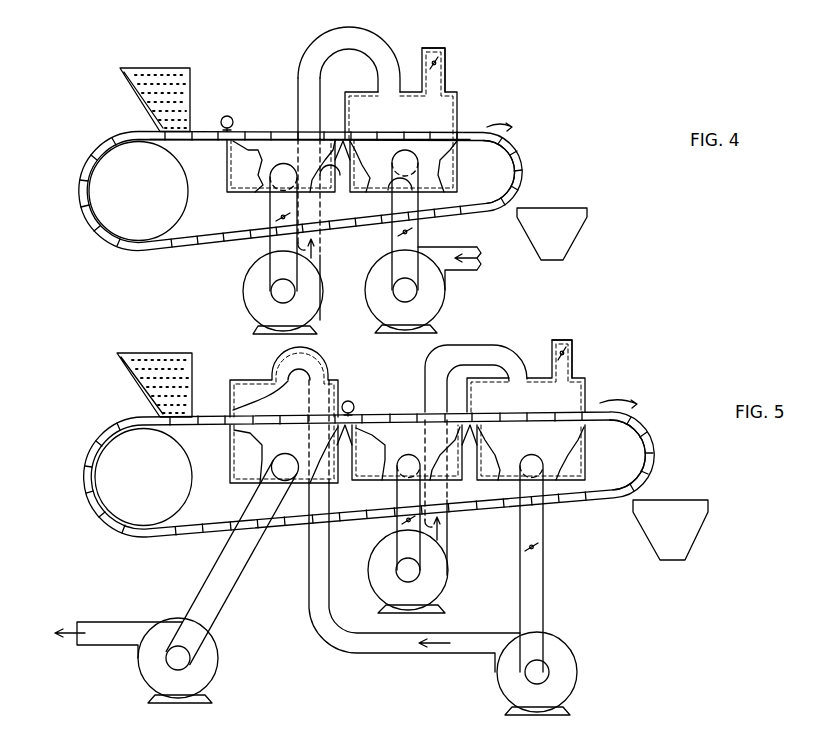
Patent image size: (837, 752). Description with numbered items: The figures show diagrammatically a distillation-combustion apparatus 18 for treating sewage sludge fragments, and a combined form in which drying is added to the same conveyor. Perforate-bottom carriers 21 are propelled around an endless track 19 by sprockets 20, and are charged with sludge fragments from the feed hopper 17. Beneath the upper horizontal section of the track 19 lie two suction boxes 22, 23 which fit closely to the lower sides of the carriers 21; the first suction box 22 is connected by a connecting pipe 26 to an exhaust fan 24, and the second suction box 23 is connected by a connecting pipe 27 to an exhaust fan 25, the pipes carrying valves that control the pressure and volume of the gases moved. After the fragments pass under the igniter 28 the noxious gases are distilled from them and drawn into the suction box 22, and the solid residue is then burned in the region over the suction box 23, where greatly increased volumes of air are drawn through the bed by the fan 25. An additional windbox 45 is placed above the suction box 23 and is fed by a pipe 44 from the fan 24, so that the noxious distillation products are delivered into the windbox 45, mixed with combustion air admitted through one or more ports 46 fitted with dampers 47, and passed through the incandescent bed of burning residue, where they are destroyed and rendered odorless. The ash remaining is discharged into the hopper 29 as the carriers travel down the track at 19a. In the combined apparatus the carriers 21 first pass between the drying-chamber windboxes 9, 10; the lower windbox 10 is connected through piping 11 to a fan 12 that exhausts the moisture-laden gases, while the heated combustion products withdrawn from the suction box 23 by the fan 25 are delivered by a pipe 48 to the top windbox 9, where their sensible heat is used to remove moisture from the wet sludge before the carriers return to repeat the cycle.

In FIG. 5, the upper windbox 9 is at (284, 382).
In FIG. 5, the lower windbox 10 is at (291, 454).
In FIG. 5, the piping 11 is at (210, 580).
In FIG. 5, the fan 12 is at (140, 676).
In FIG. 4, the feed hopper 17 is at (135, 92).
In FIG. 5, the feed hopper 17 is at (125, 372).
In FIG. 4, the distillation-combustion apparatus 18 is at (120, 255).
In FIG. 4, the endless track 19 is at (207, 143).
In FIG. 4, the descending track portion 19a is at (518, 170).
In FIG. 5, the descending track portion 19a is at (642, 450).
In FIG. 4, the sprocket 20 is at (188, 192).
In FIG. 4, the perforate-bottom carrier 21 is at (82, 176).
In FIG. 5, the perforate-bottom carrier 21 is at (80, 461).
In FIG. 4, the suction box 22 is at (288, 166).
In FIG. 5, the suction box 22 is at (414, 452).
In FIG. 4, the suction box 23 is at (403, 166).
In FIG. 5, the suction box 23 is at (531, 452).
In FIG. 4, the exhaust fan 24 is at (245, 303).
In FIG. 5, the exhaust fan 24 is at (450, 572).
In FIG. 4, the exhaust fan 25 is at (447, 303).
In FIG. 5, the exhaust fan 25 is at (578, 669).
In FIG. 4, the connecting pipe 26 is at (270, 250).
In FIG. 5, the connecting pipe 26 is at (397, 530).
In FIG. 4, the connecting pipe 27 is at (420, 245).
In FIG. 5, the connecting pipe 27 is at (545, 578).
In FIG. 4, the igniter 28 is at (231, 119).
In FIG. 5, the igniter 28 is at (352, 404).
In FIG. 4, the hopper 29 is at (583, 233).
In FIG. 5, the hopper 29 is at (708, 532).
In FIG. 4, the pipe 44 is at (348, 30).
In FIG. 5, the pipe 44 is at (476, 352).
In FIG. 4, the windbox 45 is at (401, 94).
In FIG. 5, the windbox 45 is at (526, 376).
In FIG. 4, the port 46 is at (448, 77).
In FIG. 5, the port 46 is at (578, 362).
In FIG. 4, the damper 47 is at (440, 60).
In FIG. 5, the damper 47 is at (562, 345).
In FIG. 5, the pipe 48 is at (362, 656).